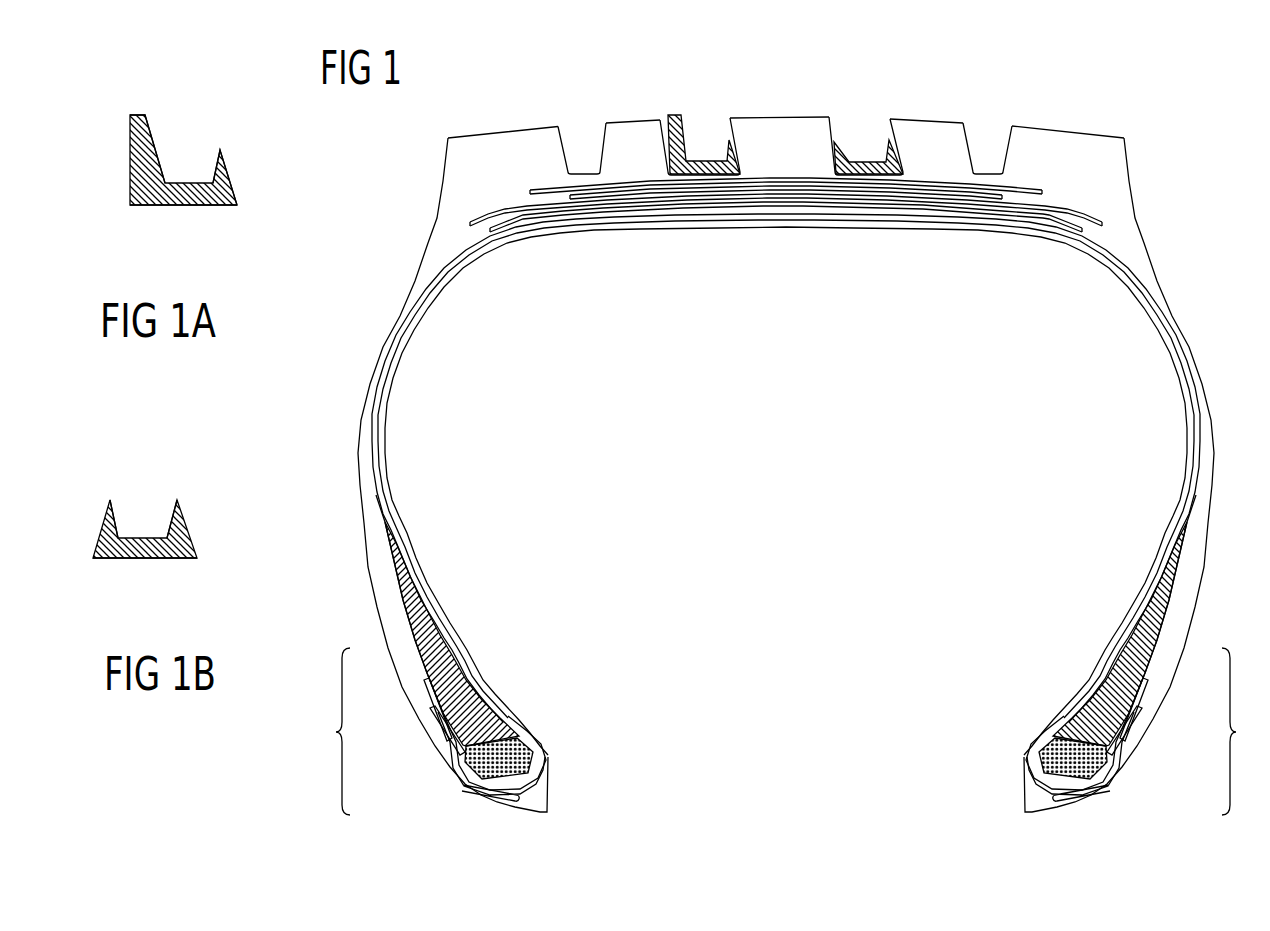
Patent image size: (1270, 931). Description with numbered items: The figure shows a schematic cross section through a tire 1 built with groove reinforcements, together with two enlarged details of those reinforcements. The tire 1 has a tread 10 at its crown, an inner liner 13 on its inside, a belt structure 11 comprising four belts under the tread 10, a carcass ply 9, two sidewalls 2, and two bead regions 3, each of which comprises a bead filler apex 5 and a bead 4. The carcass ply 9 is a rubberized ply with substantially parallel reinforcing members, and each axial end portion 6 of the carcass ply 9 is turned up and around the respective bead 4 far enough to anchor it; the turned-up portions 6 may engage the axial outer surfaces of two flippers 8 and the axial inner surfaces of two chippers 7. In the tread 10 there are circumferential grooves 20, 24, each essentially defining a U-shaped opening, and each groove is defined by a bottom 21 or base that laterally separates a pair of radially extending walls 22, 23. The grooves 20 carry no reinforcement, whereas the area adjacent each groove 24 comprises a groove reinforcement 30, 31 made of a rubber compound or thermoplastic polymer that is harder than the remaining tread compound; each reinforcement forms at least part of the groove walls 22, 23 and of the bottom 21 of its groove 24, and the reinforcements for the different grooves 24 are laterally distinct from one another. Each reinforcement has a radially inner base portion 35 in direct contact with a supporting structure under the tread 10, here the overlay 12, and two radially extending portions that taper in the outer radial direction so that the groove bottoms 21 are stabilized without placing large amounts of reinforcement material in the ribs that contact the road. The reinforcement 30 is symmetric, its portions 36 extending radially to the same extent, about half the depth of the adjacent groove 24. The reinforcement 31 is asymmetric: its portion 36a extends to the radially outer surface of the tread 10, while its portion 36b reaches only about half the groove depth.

In FIG. 1, the tire 1 is at (393, 192).
In FIG. 1, the sidewall 2 is at (386, 340).
In FIG. 1, the bead region 3 is at (786, 668).
In FIG. 1, the bead 4 is at (517, 757).
In FIG. 1, the bead filler apex 5 is at (453, 657).
In FIG. 1, the axial end portion of carcass ply 6 is at (425, 682).
In FIG. 1, the chipper 7 is at (430, 713).
In FIG. 1, the flipper 8 is at (452, 748).
In FIG. 1, the carcass ply 9 is at (510, 252).
In FIG. 1, the tread 10 is at (1113, 163).
In FIG. 1, the belt structure 11 is at (905, 203).
In FIG. 1, the overlay 12 is at (767, 178).
In FIG. 1, the inner liner 13 is at (472, 290).
In FIG. 1, the circumferential groove 20 is at (578, 128).
In FIG. 1, the groove bottom 21 is at (996, 168).
In FIG. 1, the groove wall 22 is at (972, 138).
In FIG. 1, the groove wall 23 is at (1013, 142).
In FIG. 1, the circumferential groove 24 is at (703, 115).
In FIG. 1, the symmetric groove reinforcement 30 is at (830, 142).
In FIG. 1B, the symmetric groove reinforcement 30 is at (147, 507).
In FIG. 1, the asymmetric groove reinforcement 31 is at (668, 165).
In FIG. 1A, the asymmetric groove reinforcement 31 is at (185, 125).
In FIG. 1A, the radially inner base portion 35 is at (180, 206).
In FIG. 1B, the radially inner base portion 35 is at (130, 562).
In FIG. 1B, the radially extending portion 36 is at (102, 526).
In FIG. 1A, the radially extending portion 36a is at (128, 141).
In FIG. 1A, the radially extending portion 36b is at (228, 168).